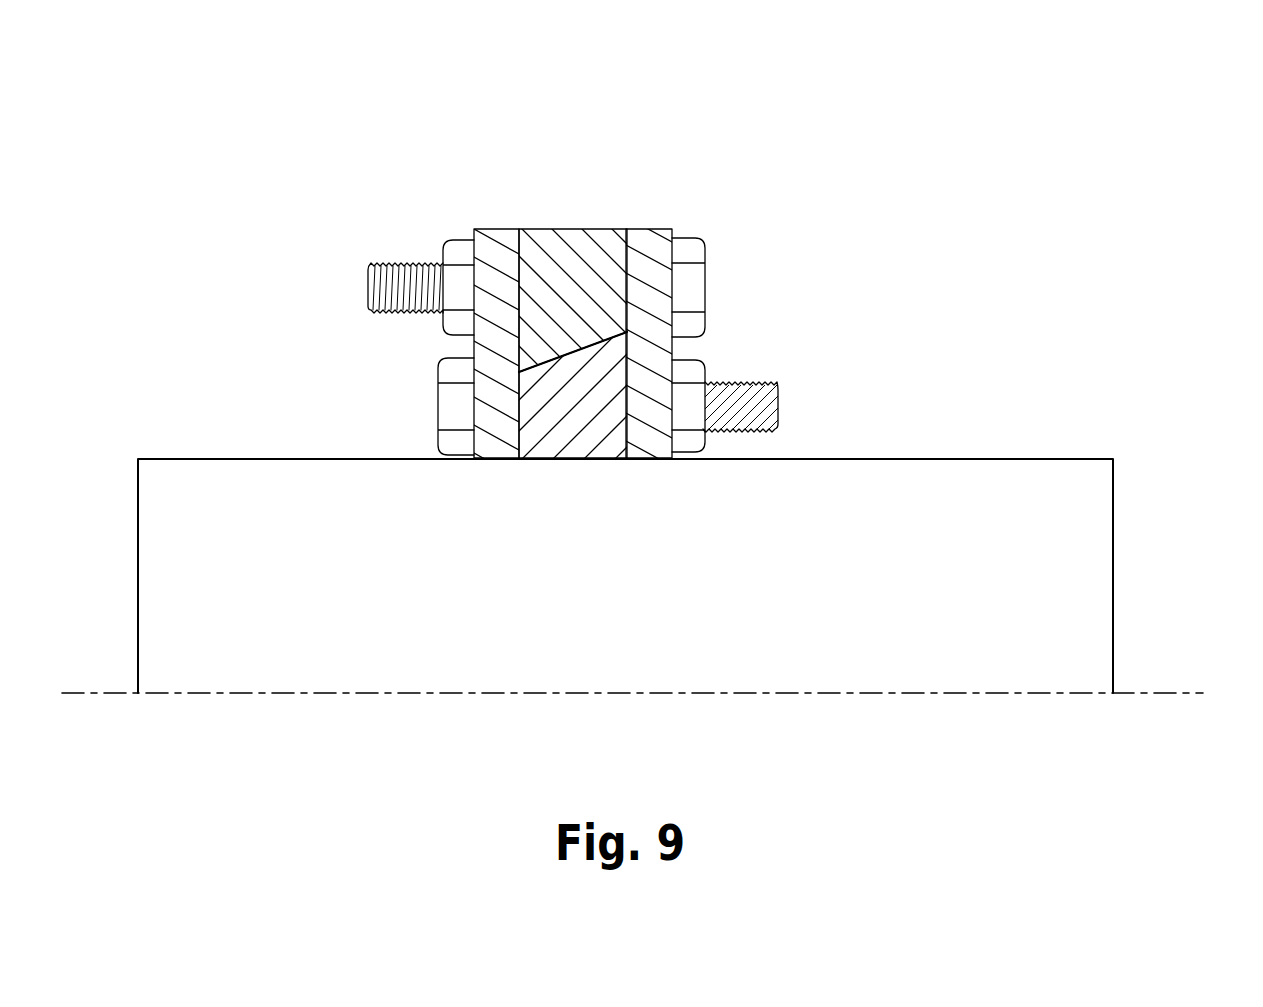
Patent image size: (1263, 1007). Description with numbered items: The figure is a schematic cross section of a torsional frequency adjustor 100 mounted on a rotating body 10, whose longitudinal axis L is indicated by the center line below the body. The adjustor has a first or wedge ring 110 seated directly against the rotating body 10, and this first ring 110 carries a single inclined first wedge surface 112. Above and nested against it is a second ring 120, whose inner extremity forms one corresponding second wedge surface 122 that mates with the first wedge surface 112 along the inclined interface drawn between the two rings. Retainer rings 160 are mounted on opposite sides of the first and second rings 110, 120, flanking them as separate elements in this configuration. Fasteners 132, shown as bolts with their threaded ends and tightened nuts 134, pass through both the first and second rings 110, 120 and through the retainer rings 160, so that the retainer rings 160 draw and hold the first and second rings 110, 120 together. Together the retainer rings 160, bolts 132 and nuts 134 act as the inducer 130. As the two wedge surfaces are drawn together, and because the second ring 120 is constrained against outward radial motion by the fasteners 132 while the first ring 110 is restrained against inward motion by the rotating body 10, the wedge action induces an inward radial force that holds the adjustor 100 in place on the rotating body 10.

The rotating body 10 is at (633, 660).
The longitudinal axis L is at (1189, 690).
The torsional frequency adjustor 100 is at (993, 106).
The first ring 110 is at (565, 430).
The first wedge surface 112 is at (578, 352).
The second ring 120 is at (571, 268).
The second wedge surface 122 is at (550, 355).
The inducer 130 is at (406, 201).
The bolts 132 is at (778, 406).
The nuts 134 is at (458, 282).
The retainer rings 160 is at (493, 228).